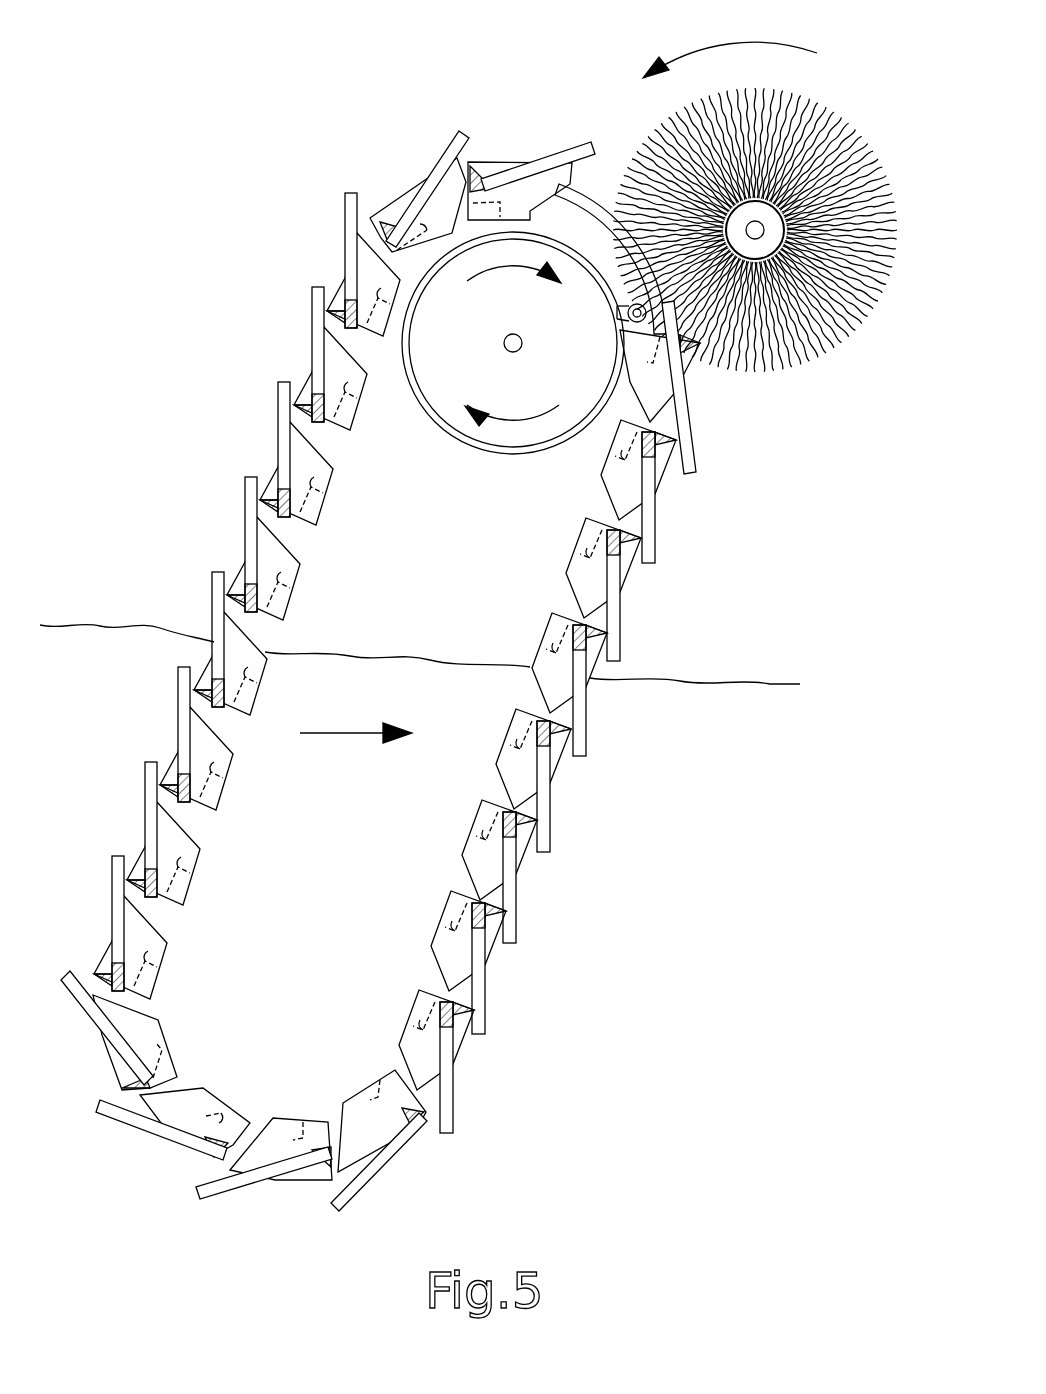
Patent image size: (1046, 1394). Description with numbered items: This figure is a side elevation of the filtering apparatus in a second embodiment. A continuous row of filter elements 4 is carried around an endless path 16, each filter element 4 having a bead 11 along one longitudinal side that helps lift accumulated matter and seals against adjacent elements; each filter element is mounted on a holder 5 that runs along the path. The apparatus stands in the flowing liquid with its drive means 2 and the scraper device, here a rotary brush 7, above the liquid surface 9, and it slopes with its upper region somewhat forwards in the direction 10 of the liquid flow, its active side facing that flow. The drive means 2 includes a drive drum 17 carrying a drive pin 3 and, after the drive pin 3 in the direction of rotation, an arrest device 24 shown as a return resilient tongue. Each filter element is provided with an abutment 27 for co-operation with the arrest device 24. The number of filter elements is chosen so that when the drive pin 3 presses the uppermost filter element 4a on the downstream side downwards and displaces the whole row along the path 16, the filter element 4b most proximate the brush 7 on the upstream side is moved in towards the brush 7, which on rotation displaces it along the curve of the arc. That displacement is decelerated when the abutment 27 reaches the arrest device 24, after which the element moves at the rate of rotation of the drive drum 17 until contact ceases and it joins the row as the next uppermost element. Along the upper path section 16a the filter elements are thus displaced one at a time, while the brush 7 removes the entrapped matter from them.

The drive means 2 is at (550, 428).
The drive pin 3 is at (650, 372).
The filter element 4 is at (545, 800).
The uppermost filter element on the downstream side 4a is at (697, 465).
The filter element most proximate the brush on the upstream side 4b is at (548, 152).
The bar holder 5 is at (493, 885).
The rotary brush 7 is at (845, 115).
The liquid surface 9 is at (75, 632).
The direction of liquid flow 10 is at (356, 715).
The bead 11 is at (303, 398).
The endless path 16 is at (362, 243).
The path section 16a is at (565, 200).
The drive drum 17 is at (372, 218).
The arrest device 24 is at (533, 205).
The abutment 27 is at (443, 207).